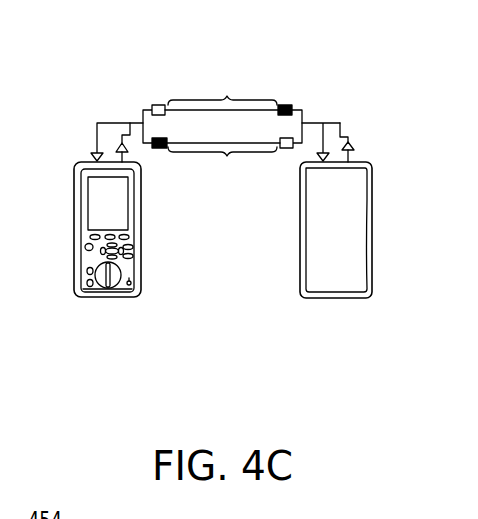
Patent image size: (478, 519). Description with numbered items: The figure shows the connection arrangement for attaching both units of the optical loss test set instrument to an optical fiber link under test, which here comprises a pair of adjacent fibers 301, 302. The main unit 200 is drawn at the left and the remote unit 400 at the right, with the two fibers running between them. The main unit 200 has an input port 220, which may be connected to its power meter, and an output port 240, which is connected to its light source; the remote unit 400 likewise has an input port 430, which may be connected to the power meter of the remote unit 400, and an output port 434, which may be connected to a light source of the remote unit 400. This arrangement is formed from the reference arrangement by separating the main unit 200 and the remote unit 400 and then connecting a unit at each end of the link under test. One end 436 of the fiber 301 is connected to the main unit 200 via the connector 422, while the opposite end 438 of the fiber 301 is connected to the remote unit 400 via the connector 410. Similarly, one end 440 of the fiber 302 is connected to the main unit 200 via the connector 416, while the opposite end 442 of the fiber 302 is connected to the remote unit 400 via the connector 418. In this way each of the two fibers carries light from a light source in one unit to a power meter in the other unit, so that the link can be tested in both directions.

The main unit 200 is at (137, 257).
The input port 220 is at (82, 162).
The output port 240 is at (157, 148).
The fiber 301 is at (221, 88).
The fiber 302 is at (223, 166).
The remote unit 400 is at (352, 247).
The connector 410 is at (296, 107).
The connector 416 is at (163, 148).
The connector 418 is at (278, 141).
The connector 422 is at (152, 110).
The input port 430 is at (308, 160).
The output port 434 is at (353, 161).
The end of fiber 436 is at (160, 95).
The opposite end of fiber 438 is at (290, 95).
The end of fiber 440 is at (160, 128).
The opposite end of fiber 442 is at (290, 130).